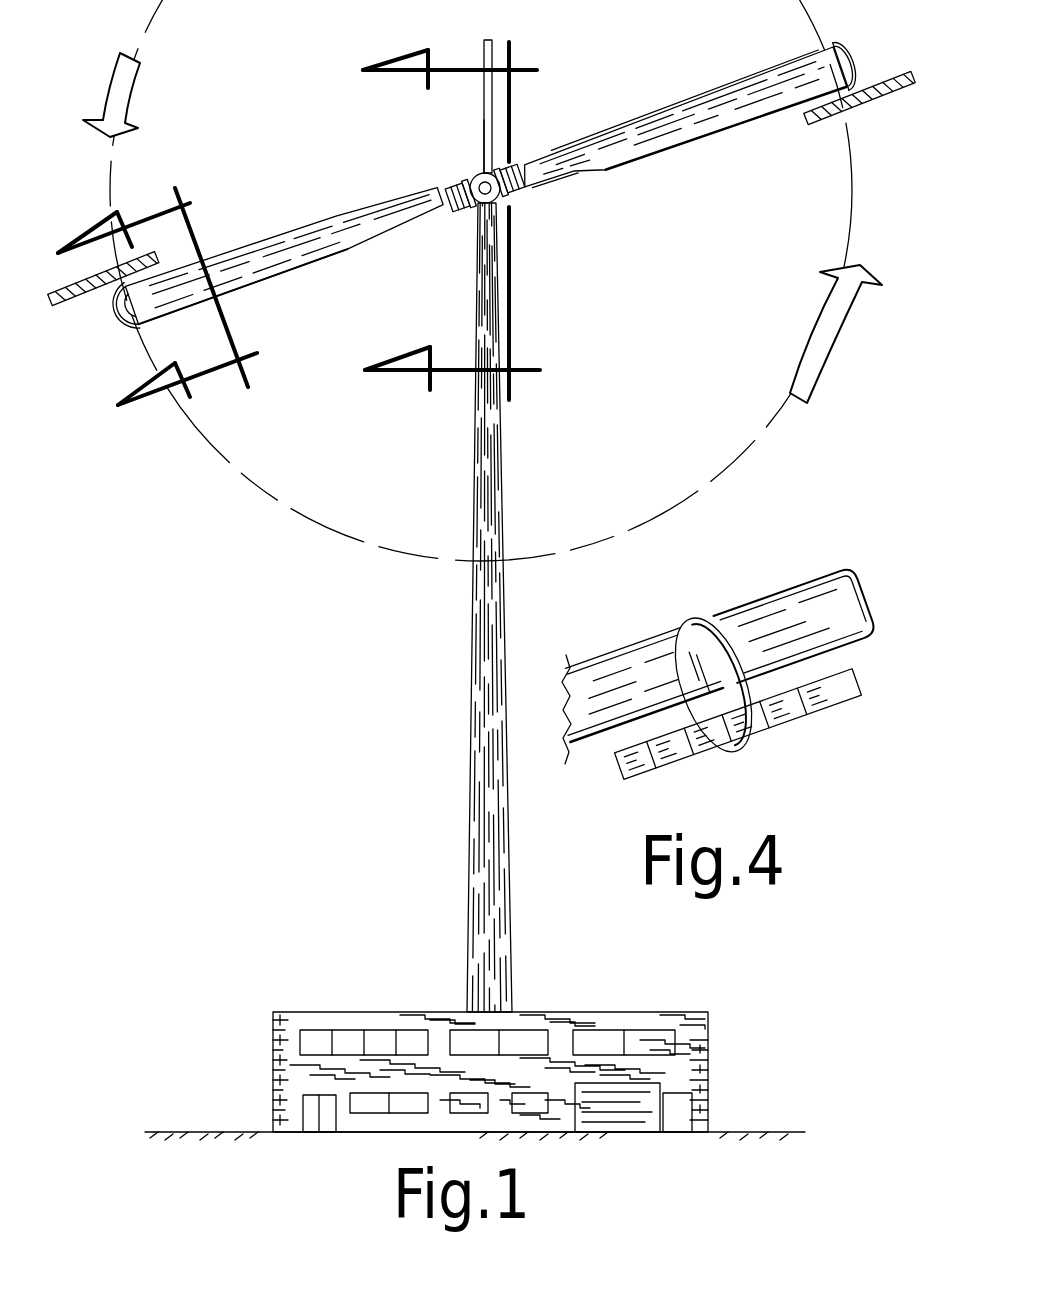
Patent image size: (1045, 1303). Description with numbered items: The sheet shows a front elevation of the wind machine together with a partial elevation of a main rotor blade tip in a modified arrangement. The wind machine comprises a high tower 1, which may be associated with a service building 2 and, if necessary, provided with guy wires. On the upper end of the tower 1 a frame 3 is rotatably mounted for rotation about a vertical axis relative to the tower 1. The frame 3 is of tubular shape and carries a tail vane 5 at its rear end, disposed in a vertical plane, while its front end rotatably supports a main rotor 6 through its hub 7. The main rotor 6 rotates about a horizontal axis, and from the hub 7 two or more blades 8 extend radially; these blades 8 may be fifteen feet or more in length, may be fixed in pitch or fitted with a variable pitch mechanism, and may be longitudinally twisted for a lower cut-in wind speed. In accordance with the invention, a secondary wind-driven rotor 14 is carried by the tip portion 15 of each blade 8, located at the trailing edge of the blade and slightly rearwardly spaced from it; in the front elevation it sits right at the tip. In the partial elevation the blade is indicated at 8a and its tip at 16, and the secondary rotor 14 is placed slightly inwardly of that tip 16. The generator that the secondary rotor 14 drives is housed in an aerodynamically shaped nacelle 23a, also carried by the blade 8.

In FIG. 1, the tower 1 is at (487, 640).
In FIG. 1, the service building 2 is at (373, 1022).
In FIG. 1, the frame 3 is at (175, 281).
In FIG. 1, the tail vane 5 is at (488, 133).
In FIG. 1, the main rotor 6 is at (602, 185).
In FIG. 1, the hub 7 is at (477, 179).
In FIG. 1, the blade 8 is at (752, 118).
In FIG. 4, the blade 8a is at (632, 670).
In FIG. 1, the secondary wind-driven rotor 14 is at (481, 188).
In FIG. 4, the secondary wind-driven rotor 14 is at (747, 726).
In FIG. 1, the tip portion 15 is at (822, 60).
In FIG. 4, the tip of the blade 16 is at (840, 605).
In FIG. 1, the nacelle 23a is at (857, 52).
In FIG. 4, the nacelle 23a is at (705, 645).